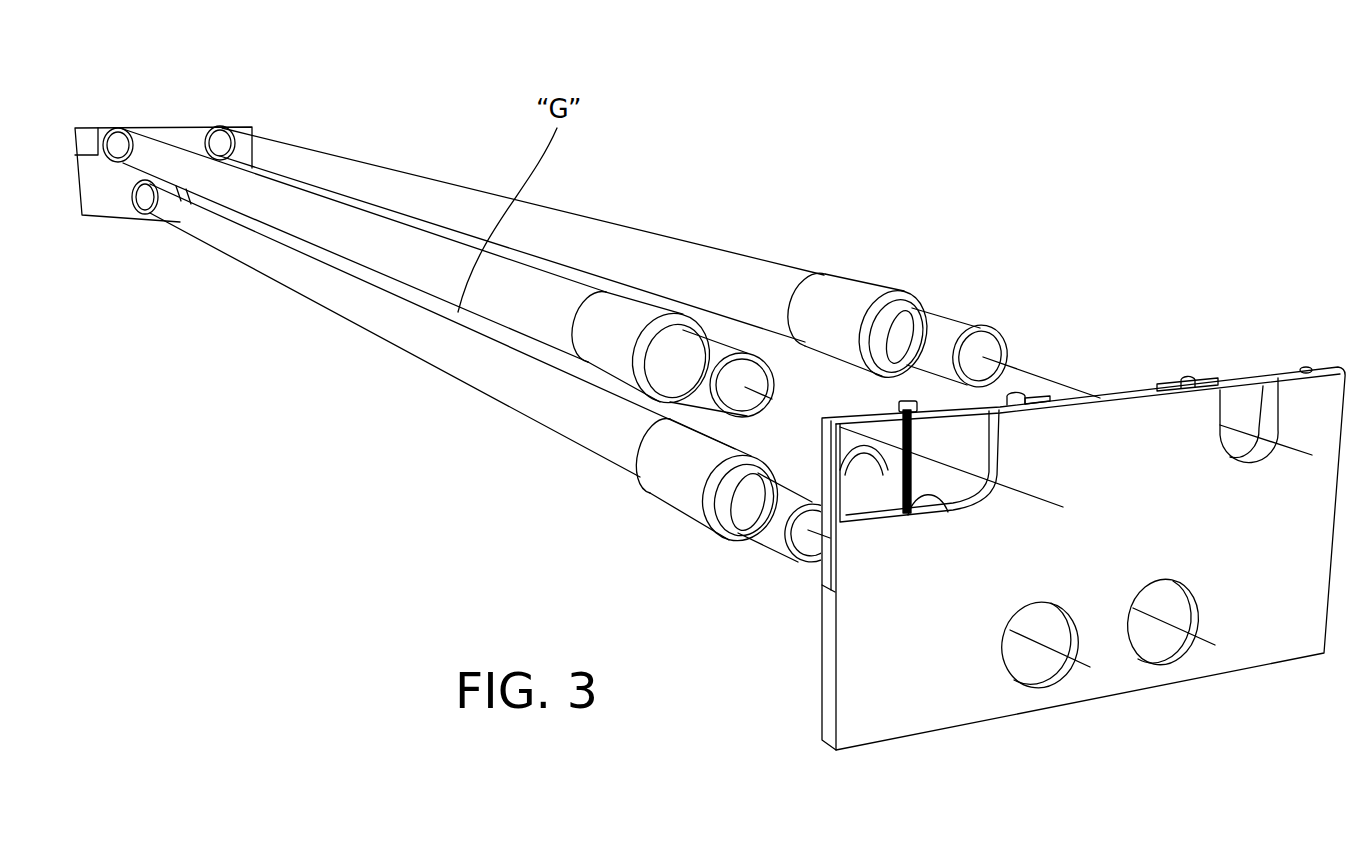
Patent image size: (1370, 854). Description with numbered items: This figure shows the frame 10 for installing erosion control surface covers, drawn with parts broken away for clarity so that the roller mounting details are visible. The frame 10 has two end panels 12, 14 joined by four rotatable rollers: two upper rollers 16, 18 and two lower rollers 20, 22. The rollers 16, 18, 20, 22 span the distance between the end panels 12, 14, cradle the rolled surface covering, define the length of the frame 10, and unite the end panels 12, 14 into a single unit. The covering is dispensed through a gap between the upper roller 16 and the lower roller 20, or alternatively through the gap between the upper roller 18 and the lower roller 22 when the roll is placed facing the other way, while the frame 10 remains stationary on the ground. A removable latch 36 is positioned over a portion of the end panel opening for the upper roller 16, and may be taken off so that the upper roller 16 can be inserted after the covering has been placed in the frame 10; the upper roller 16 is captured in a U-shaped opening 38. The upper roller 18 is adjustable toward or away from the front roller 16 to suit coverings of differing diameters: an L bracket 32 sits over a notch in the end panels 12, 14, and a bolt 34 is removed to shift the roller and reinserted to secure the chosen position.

The frame 10 is at (700, 168).
The end panel 12 is at (163, 132).
The end panel 14 is at (905, 708).
The upper roller 16 is at (328, 158).
The upper roller 18 is at (258, 204).
The lower roller 20 is at (737, 430).
The lower roller 22 is at (363, 316).
The L bracket 32 is at (75, 130).
The bolt 34 is at (100, 128).
The removable latch 36 is at (234, 124).
The U-shaped opening 38 is at (1270, 393).